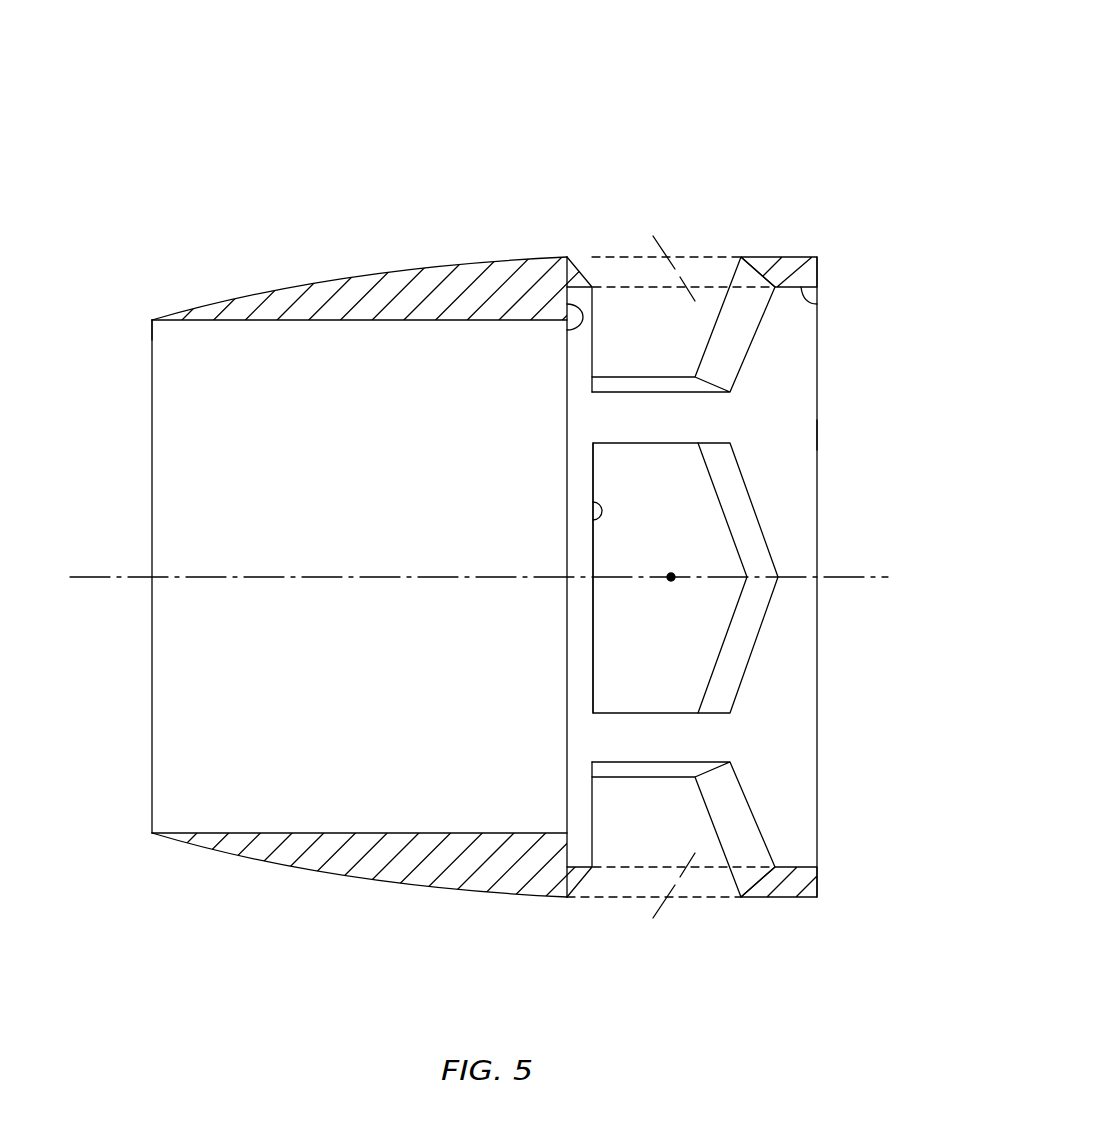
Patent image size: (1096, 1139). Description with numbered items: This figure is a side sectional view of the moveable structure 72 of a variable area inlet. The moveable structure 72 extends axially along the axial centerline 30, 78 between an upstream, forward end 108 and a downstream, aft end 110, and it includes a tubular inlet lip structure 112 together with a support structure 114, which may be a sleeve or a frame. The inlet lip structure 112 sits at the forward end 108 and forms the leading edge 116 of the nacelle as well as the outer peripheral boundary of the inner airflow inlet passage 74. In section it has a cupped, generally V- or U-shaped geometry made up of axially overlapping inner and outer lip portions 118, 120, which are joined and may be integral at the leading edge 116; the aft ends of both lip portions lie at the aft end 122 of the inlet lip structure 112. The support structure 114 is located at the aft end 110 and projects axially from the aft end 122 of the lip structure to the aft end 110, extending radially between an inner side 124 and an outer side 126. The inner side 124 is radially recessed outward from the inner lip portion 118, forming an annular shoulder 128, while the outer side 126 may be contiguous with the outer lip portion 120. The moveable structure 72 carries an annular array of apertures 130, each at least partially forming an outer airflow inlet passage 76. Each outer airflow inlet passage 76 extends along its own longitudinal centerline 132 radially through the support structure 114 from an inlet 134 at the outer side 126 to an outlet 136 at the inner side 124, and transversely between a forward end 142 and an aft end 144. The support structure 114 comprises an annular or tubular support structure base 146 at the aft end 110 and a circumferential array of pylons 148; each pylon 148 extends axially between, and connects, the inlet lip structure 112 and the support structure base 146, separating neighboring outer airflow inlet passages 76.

The moveable structure 72 is at (834, 99).
The inner airflow inlet passage 74 is at (204, 433).
The outer airflow inlet passage 76 is at (671, 571).
The axial centerline 78 is at (880, 577).
The axial centerline 30 is at (495, 528).
The forward end 108 is at (97, 360).
The aft end 110 is at (817, 272).
The inlet lip structure 112 is at (152, 320).
The support structure 114 is at (817, 257).
The leading edge 116 is at (152, 320).
The inner lip portion 118 is at (360, 322).
The outer lip portion 120 is at (352, 262).
The aft end of the inlet lip structure 122 is at (567, 833).
The inner side of the support structure 124 is at (817, 306).
The outer side of the support structure 126 is at (787, 256).
The shoulder 128 is at (567, 327).
The aperture 130 is at (702, 256).
The longitudinal centerline 132 is at (671, 265).
The inlet 134 is at (605, 256).
The outlet 136 is at (615, 291).
The forward end of the outer airflow inlet passage 142 is at (579, 271).
The aft end of the outer airflow inlet passage 144 is at (742, 256).
The support structure base 146 is at (818, 437).
The pylon 148 is at (626, 448).